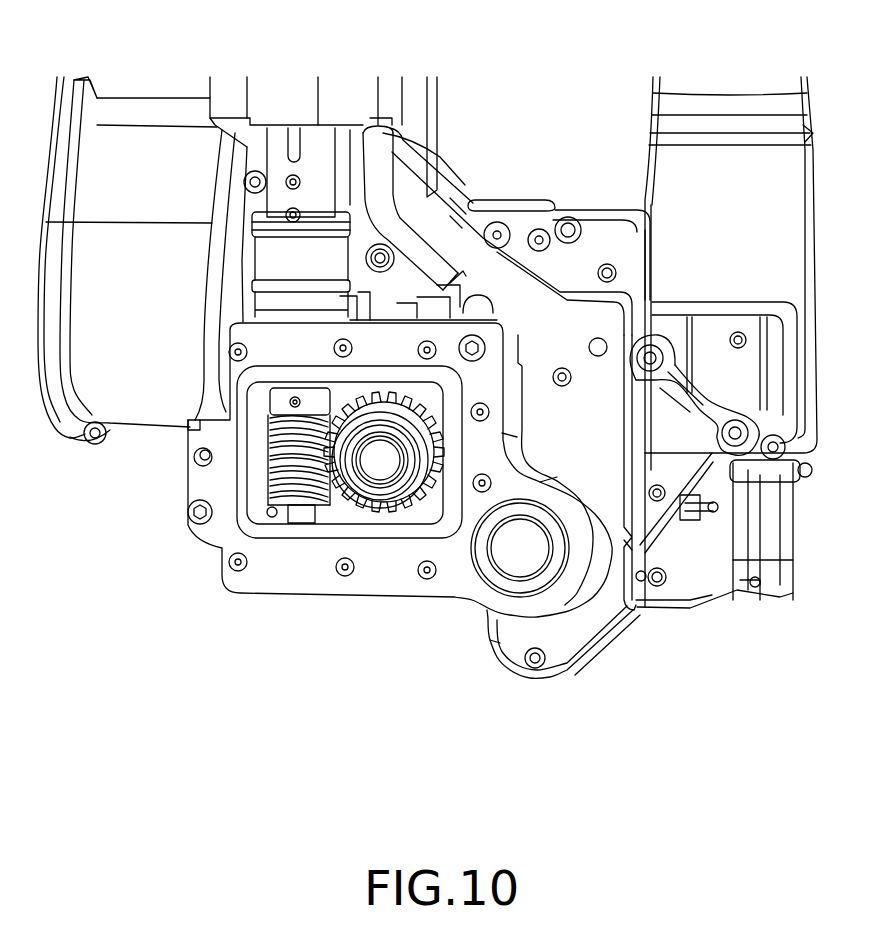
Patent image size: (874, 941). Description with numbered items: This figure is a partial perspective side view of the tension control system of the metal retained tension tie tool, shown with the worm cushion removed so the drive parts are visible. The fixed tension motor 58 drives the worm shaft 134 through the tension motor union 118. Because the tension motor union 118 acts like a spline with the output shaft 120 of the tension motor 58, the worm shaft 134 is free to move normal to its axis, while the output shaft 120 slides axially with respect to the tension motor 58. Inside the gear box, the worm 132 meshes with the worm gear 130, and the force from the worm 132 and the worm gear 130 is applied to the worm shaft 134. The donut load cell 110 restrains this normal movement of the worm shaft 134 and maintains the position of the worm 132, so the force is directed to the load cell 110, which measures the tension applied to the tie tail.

The tension motor 58 is at (338, 97).
The donut load cell 110 is at (280, 303).
The tension motor union 118 is at (317, 183).
The output shaft 120 is at (293, 133).
The worm gear 130 is at (392, 517).
The worm 132 is at (273, 508).
The worm shaft 134 is at (300, 517).